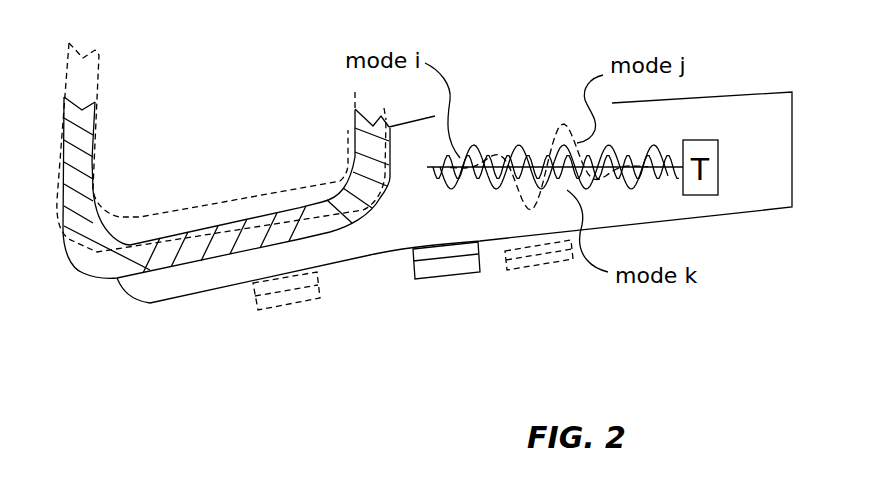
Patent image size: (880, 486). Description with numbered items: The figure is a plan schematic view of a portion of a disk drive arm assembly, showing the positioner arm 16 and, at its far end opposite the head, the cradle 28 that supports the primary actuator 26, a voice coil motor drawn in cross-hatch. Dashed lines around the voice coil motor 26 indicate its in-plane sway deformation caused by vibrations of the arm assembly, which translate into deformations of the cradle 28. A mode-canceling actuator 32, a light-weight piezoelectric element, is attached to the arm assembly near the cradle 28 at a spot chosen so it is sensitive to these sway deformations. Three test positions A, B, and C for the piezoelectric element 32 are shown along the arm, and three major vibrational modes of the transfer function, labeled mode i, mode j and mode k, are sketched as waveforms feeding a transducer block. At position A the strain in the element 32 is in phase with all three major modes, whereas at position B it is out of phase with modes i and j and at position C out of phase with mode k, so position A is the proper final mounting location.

The positioner arm 16 is at (735, 108).
The primary actuator 26 is at (95, 145).
The cradle 28 is at (143, 290).
The mode-canceling actuator 32 is at (415, 282).
The test position A is at (453, 298).
The test position B is at (252, 337).
The test position C is at (553, 304).